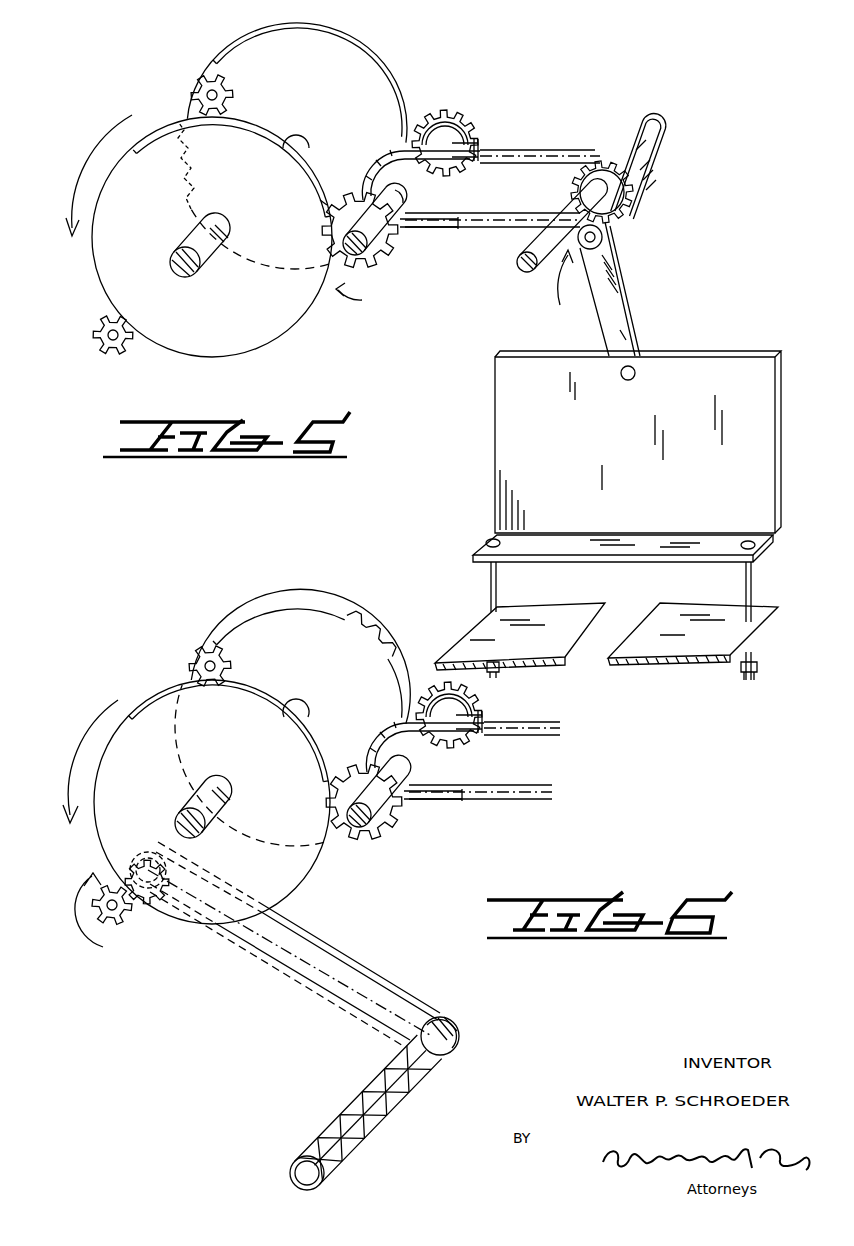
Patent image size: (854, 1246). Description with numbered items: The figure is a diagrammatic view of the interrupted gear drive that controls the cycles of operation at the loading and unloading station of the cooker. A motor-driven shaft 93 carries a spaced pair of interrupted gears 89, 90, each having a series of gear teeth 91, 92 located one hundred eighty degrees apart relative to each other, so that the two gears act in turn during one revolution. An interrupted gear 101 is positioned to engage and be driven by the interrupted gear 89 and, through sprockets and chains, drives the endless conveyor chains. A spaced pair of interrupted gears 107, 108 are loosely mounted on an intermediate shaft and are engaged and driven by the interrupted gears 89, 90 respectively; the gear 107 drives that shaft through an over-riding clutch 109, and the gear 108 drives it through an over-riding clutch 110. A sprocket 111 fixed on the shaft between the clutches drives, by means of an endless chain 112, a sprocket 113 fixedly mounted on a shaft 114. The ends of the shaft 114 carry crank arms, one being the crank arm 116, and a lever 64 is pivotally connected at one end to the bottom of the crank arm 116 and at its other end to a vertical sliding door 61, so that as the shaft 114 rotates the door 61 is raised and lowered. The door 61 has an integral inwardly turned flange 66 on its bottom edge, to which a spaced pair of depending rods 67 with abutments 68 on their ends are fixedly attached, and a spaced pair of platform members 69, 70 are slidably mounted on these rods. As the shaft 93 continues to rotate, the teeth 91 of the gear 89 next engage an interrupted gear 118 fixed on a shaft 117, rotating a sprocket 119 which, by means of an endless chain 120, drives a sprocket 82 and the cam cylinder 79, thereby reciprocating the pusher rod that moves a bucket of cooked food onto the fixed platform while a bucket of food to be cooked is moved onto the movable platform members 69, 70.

In FIG. 5, the vertical sliding door 61 is at (500, 410).
In FIG. 5, the lever 64 is at (622, 316).
In FIG. 5, the inwardly turned flange 66 is at (690, 558).
In FIG. 5, the depending rod 67 is at (754, 582).
In FIG. 5, the abutment 68 is at (748, 673).
In FIG. 5, the platform member 69 is at (560, 645).
In FIG. 5, the platform member 70 is at (668, 648).
In FIG. 6, the cam cylinder 79 is at (425, 1076).
In FIG. 6, the sprocket 82 is at (460, 1028).
In FIG. 5, the interrupted gear 89 is at (266, 346).
In FIG. 6, the interrupted gear 89 is at (298, 880).
In FIG. 5, the interrupted gear 90 is at (398, 82).
In FIG. 6, the interrupted gear 90 is at (312, 603).
In FIG. 5, the gear teeth 91 is at (328, 203).
In FIG. 6, the gear teeth 92 is at (352, 610).
In FIG. 5, the shaft 93 is at (185, 278).
In FIG. 6, the shaft 93 is at (186, 813).
In FIG. 5, the interrupted gear 101 is at (200, 84).
In FIG. 6, the interrupted gear 101 is at (203, 650).
In FIG. 5, the interrupted gear 107 is at (370, 270).
In FIG. 5, the interrupted gear 108 is at (452, 114).
In FIG. 5, the over-riding clutch 109 is at (410, 253).
In FIG. 5, the over-riding clutch 110 is at (474, 141).
In FIG. 5, the sprocket 111 is at (442, 200).
In FIG. 5, the endless chain 112 is at (537, 160).
In FIG. 5, the sprocket 113 is at (570, 184).
In FIG. 5, the shaft 114 is at (533, 240).
In FIG. 5, the crank arm 116 is at (648, 164).
In FIG. 6, the shaft 117 is at (114, 922).
In FIG. 6, the interrupted gear 118 is at (125, 913).
In FIG. 6, the sprocket 119 is at (178, 888).
In FIG. 6, the endless chain 120 is at (350, 958).